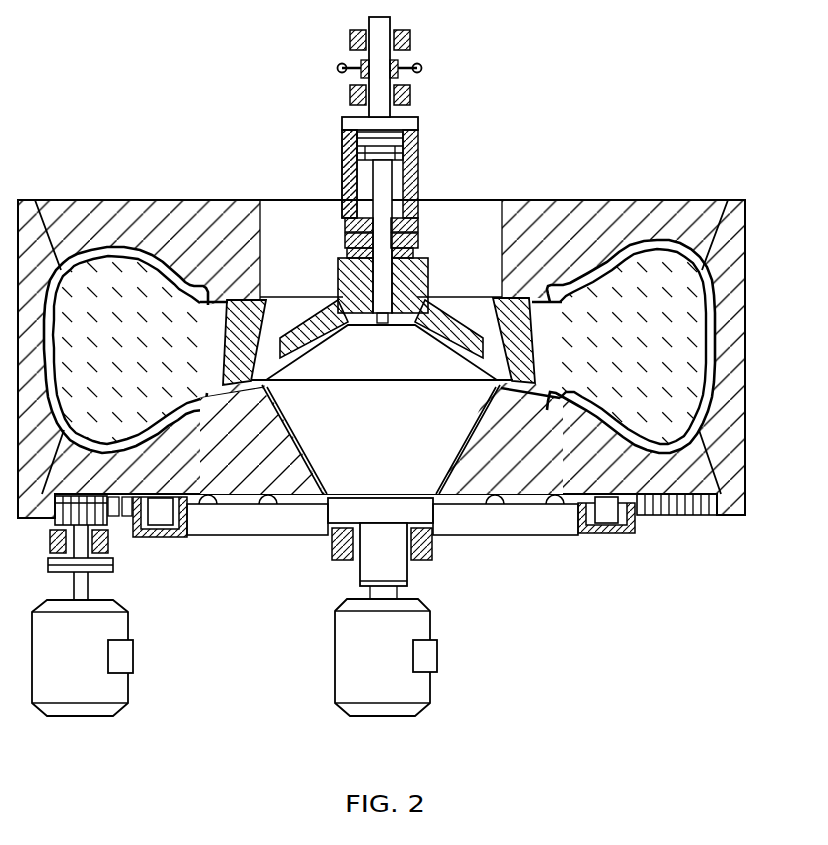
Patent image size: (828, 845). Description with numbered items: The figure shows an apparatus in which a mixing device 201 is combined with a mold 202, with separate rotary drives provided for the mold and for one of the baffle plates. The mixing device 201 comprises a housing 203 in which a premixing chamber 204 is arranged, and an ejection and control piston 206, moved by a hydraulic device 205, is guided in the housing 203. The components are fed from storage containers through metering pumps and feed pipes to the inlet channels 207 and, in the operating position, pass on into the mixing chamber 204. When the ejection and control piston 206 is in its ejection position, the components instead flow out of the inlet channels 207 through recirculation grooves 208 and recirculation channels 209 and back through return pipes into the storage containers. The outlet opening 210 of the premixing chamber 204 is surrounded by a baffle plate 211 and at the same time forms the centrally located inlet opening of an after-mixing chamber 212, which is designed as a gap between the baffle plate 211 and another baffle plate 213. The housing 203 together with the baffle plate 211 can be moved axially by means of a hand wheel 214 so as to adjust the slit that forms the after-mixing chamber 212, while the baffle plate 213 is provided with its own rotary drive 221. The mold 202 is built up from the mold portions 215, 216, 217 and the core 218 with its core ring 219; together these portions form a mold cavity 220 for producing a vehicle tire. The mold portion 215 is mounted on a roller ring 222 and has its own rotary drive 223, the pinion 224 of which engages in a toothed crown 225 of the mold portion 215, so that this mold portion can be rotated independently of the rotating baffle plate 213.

The mixing device 201 is at (426, 123).
The mold 202 is at (563, 194).
The housing 203 is at (345, 141).
The premixing chamber 204 is at (372, 285).
The hydraulic device 205 is at (398, 172).
The ejection and control piston 206 is at (378, 183).
The inlet channels 207 is at (348, 252).
The recirculation grooves 208 is at (343, 213).
The recirculation channels 209 is at (345, 233).
The outlet opening 210 is at (390, 312).
The baffle plate 211 is at (307, 323).
The after-mixing chamber 212 is at (400, 323).
The baffle plate 213 is at (453, 360).
The hand wheel 214 is at (410, 40).
The mold portion 215 is at (237, 470).
The mold portion 216 is at (728, 240).
The mold portion 217 is at (637, 217).
The core 218 is at (673, 290).
The core ring 219 is at (548, 504).
The mold cavity 220 is at (600, 258).
The rotary drive 221 is at (350, 627).
The roller ring 222 is at (613, 532).
The rotary drive 223 is at (113, 628).
The pinion 224 is at (107, 520).
The toothed crown 225 is at (680, 517).